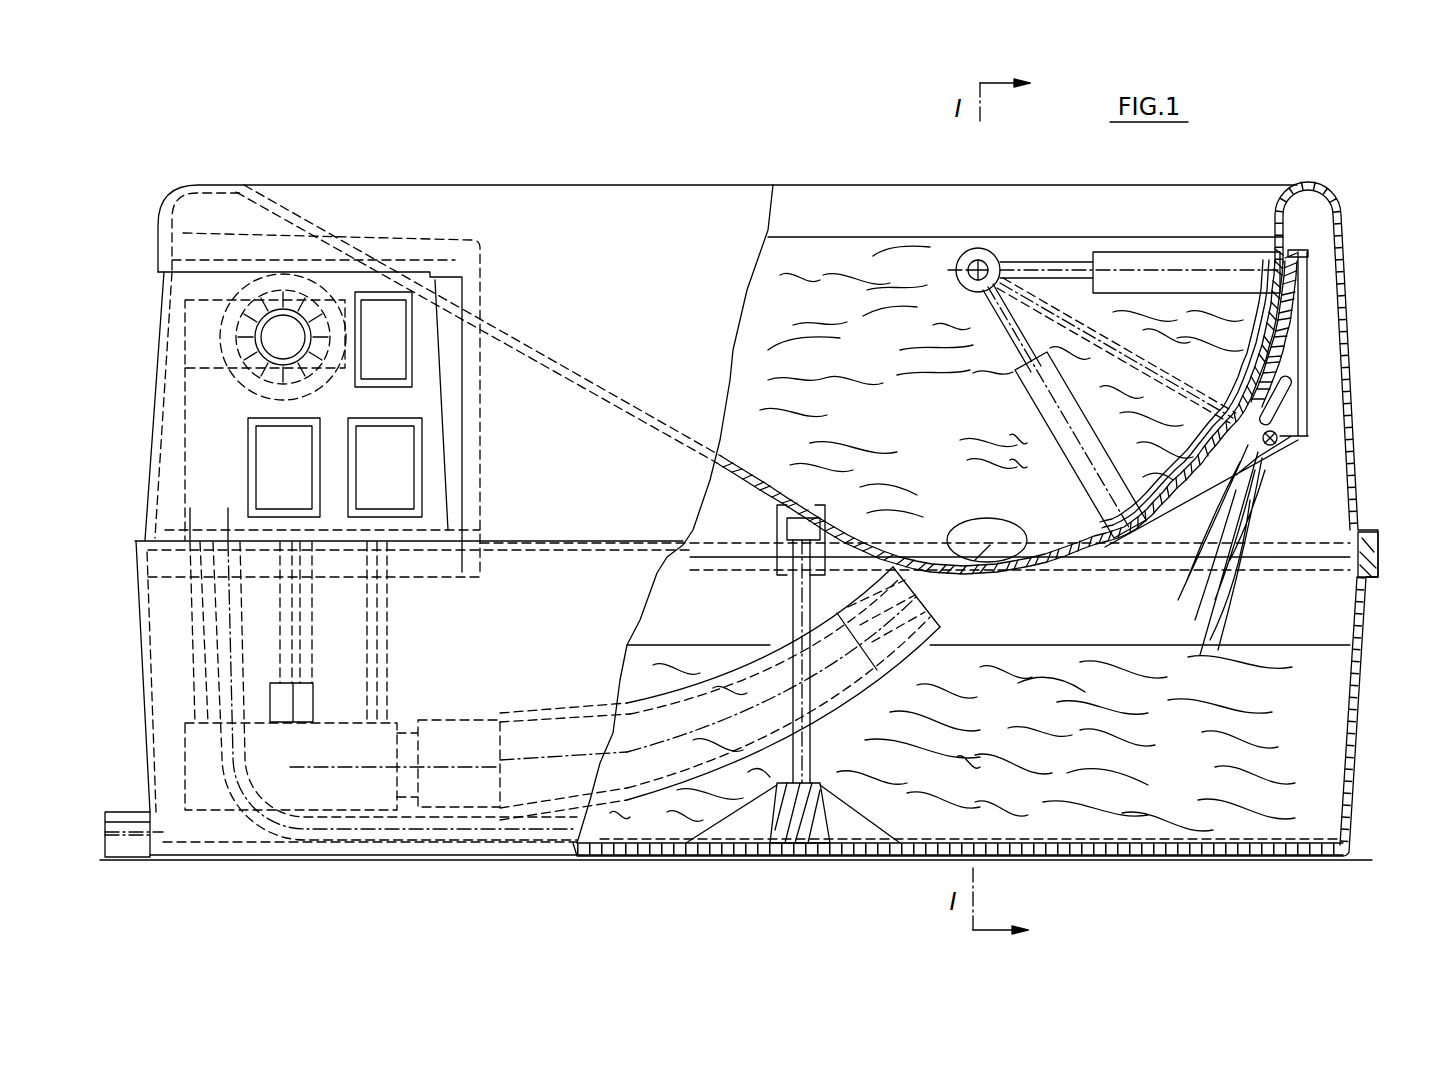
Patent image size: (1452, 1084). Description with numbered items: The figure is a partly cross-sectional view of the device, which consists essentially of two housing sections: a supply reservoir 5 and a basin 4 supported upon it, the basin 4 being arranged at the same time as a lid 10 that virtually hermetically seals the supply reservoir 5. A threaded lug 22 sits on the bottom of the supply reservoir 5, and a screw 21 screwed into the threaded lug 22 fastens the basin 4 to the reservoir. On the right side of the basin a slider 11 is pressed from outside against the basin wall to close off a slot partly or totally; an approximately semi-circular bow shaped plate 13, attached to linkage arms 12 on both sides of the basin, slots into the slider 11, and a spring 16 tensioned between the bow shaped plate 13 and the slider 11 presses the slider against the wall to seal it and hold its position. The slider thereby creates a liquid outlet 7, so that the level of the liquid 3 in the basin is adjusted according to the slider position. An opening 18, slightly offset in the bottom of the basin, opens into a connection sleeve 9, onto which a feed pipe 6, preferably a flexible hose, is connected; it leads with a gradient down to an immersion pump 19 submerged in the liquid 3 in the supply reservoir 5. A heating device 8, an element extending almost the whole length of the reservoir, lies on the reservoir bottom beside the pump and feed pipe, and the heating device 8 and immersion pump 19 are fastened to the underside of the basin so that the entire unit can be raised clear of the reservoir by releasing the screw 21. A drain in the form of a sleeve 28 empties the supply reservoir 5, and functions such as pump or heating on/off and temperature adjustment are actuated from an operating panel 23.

The liquid 3 is at (952, 538).
The basin 4 is at (858, 185).
The supply reservoir 5 is at (1057, 800).
The feed pipe 6 is at (653, 773).
The liquid outlet 7 is at (1338, 232).
The heating device 8 is at (353, 830).
The connection sleeve 9 is at (958, 606).
The lid 10 is at (1357, 498).
The slider 11 is at (1295, 340).
The linkage arms 12 is at (978, 248).
The bow shaped plate 13 is at (1283, 438).
The spring 16 is at (1293, 380).
The opening 18 is at (985, 532).
The immersion pump 19 is at (215, 795).
The screw 21 is at (795, 613).
The threaded lug 22 is at (805, 843).
The operating panel 23 is at (220, 403).
The sleeve 28 is at (130, 840).